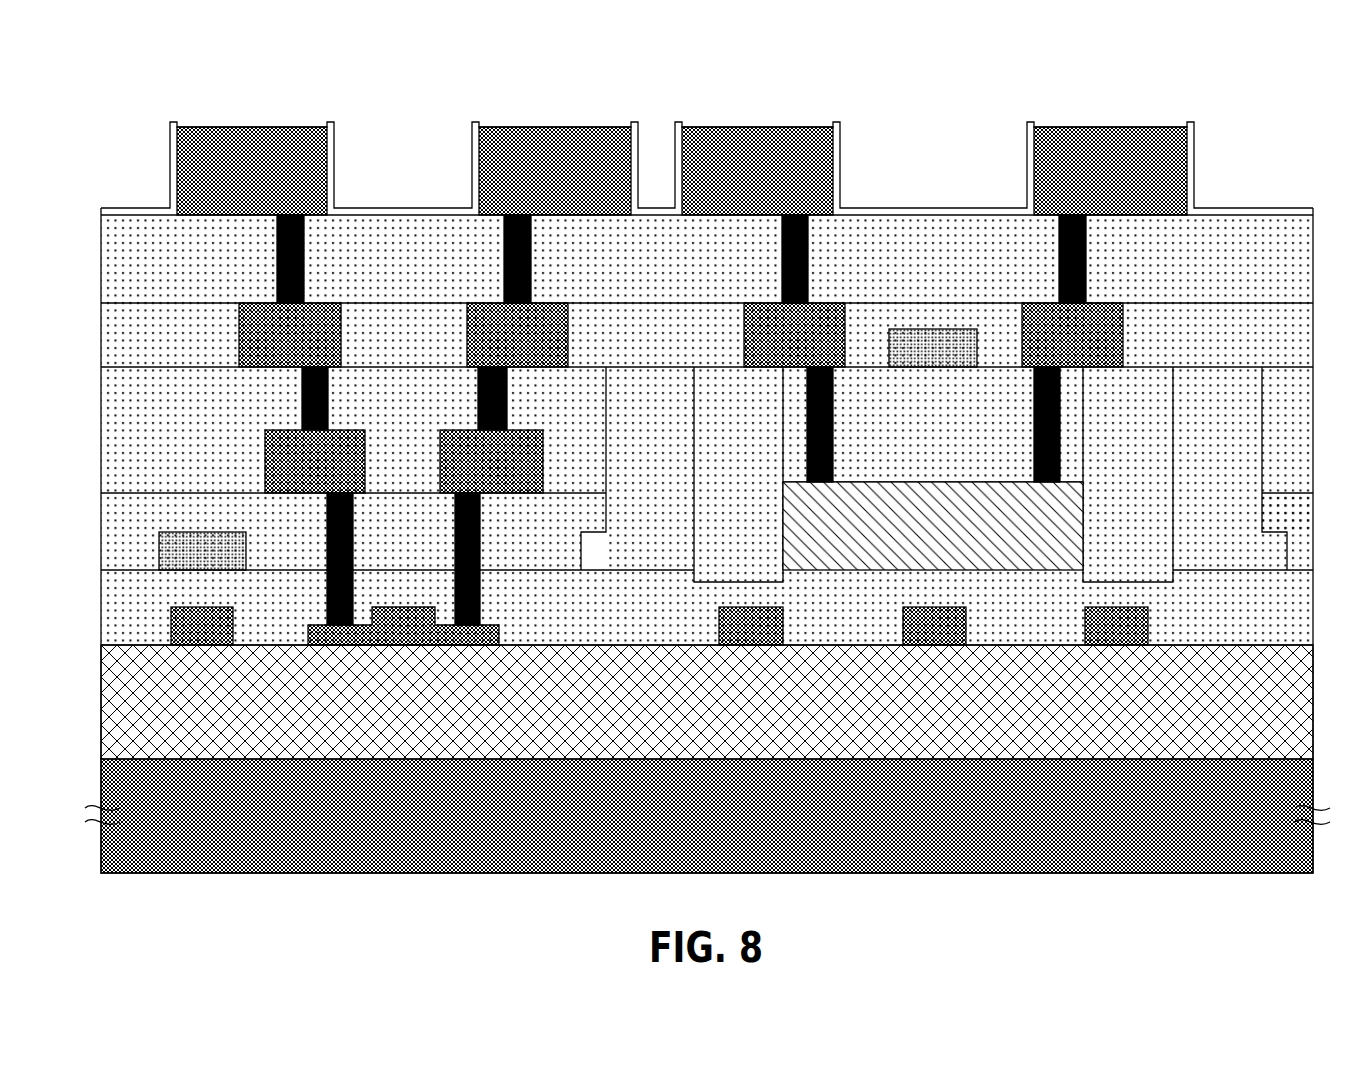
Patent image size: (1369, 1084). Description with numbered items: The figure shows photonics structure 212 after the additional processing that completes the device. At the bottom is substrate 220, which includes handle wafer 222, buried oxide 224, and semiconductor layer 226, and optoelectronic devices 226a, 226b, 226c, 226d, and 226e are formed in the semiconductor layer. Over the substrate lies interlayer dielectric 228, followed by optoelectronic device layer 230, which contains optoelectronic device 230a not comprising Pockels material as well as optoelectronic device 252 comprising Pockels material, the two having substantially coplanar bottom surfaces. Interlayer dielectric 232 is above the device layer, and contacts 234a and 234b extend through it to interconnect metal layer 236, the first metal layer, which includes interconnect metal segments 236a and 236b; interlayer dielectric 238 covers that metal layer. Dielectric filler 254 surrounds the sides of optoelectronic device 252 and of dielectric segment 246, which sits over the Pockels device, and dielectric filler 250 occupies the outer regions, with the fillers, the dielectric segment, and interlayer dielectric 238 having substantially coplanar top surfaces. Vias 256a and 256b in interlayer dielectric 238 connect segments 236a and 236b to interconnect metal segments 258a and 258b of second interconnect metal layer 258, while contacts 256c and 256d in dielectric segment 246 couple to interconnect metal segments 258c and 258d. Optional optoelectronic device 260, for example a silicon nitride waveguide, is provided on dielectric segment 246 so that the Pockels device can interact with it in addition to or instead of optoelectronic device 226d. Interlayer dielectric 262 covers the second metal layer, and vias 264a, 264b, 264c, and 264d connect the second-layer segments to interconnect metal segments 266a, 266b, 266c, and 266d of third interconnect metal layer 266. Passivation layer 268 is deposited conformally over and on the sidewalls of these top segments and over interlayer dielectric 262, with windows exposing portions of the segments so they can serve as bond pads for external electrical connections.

The photonics structure 212 is at (1268, 90).
The substrate 220 is at (701, 741).
The handle wafer 222 is at (1295, 785).
The buried oxide 224 is at (1295, 705).
The semiconductor layer 226 is at (770, 626).
The optoelectronic device 226a is at (215, 626).
The optoelectronic device 226b is at (500, 631).
The optoelectronic device 226c is at (765, 626).
The optoelectronic device 226d is at (948, 626).
The optoelectronic device 226e is at (1130, 626).
The interlayer dielectric 228 is at (120, 593).
The optoelectronic device layer 230 is at (181, 551).
The optoelectronic device 230a is at (228, 550).
The interlayer dielectric 232 is at (120, 516).
The contact 234a is at (355, 518).
The contact 234b is at (455, 551).
The interconnect metal layer 236 is at (327, 461).
The interconnect metal segment 236a is at (345, 462).
The interconnect metal segment 236b is at (522, 462).
The interlayer dielectric 238 is at (120, 394).
The dielectric segment 246 is at (947, 410).
The dielectric filler 250 is at (665, 410).
The optoelectronic device 252 is at (932, 490).
The dielectric filler 254 is at (754, 410).
The via 256a is at (329, 403).
The via 256b is at (508, 403).
The contact 256c is at (834, 430).
The contact 256d is at (1033, 426).
The second interconnect metal layer 258 is at (678, 335).
The interconnect metal segment 258a is at (325, 334).
The interconnect metal segment 258b is at (548, 334).
The interconnect metal segment 258c is at (762, 338).
The interconnect metal segment 258d is at (1100, 334).
The optional optoelectronic device 260 is at (932, 334).
The interlayer dielectric 262 is at (120, 256).
The via 264a is at (305, 264).
The via 264b is at (532, 264).
The via 264c is at (809, 264).
The via 264d is at (1087, 264).
The third interconnect metal layer 266 is at (615, 149).
The interconnect metal segment 266a is at (250, 137).
The interconnect metal segment 266b is at (553, 137).
The interconnect metal segment 266c is at (754, 137).
The interconnect metal segment 266d is at (1107, 137).
The passivation layer 268 is at (133, 208).